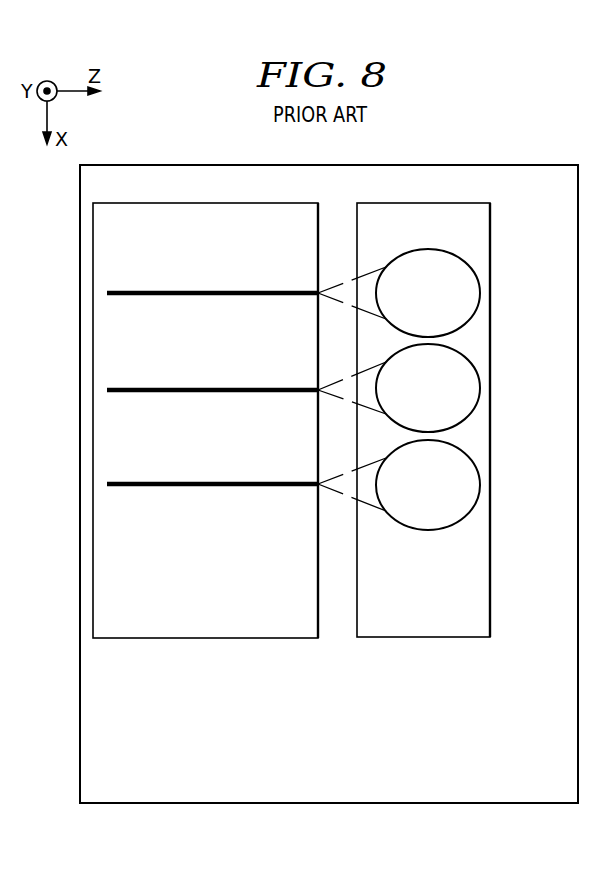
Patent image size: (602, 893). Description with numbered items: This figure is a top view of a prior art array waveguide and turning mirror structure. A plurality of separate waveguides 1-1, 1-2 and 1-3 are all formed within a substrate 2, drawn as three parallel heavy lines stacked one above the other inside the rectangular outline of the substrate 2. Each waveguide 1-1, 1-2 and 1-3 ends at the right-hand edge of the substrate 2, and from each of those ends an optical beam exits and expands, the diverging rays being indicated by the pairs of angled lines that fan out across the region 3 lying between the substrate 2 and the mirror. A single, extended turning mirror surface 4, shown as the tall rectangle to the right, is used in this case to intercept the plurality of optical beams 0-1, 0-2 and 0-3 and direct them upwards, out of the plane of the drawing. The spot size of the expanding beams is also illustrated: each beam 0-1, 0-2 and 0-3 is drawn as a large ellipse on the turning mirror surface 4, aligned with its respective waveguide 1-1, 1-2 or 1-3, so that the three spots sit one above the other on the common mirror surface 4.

The waveguide 1-1 is at (148, 484).
The waveguide 1-2 is at (148, 390).
The waveguide 1-3 is at (148, 293).
The substrate 2 is at (219, 628).
The gap / emission region 3 is at (318, 217).
The extended turning mirror surface 4 is at (413, 213).
The optical beam 0-1 is at (399, 485).
The optical beam 0-2 is at (399, 388).
The optical beam 0-3 is at (399, 293).